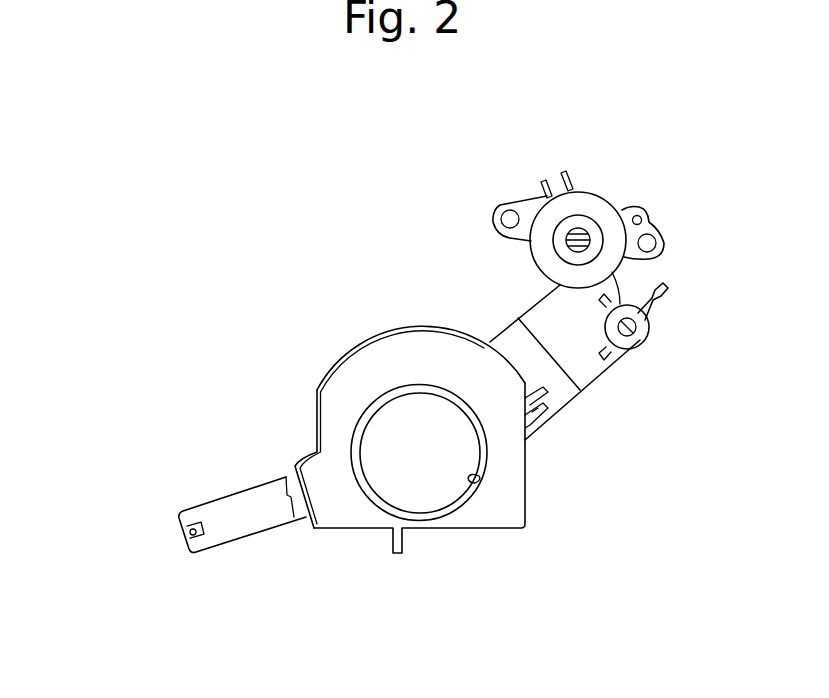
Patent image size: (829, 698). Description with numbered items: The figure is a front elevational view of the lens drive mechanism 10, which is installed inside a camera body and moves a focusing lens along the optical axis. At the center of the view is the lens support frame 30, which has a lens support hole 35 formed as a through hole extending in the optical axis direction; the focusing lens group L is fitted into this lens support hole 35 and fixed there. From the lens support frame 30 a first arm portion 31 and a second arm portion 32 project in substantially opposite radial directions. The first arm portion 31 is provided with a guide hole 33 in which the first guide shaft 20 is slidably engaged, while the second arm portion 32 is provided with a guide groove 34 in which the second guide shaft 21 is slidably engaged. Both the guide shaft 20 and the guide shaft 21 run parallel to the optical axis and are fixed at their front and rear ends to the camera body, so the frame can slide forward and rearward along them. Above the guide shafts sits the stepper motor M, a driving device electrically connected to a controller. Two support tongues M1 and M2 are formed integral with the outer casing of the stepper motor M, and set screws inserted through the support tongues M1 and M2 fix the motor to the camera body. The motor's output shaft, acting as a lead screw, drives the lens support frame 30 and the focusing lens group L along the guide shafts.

The lens drive mechanism 10 is at (338, 196).
The lens support frame 30 is at (345, 392).
The first arm portion 31 is at (548, 315).
The second arm portion 32 is at (232, 517).
The guide hole 33 is at (645, 332).
The guide groove 34 is at (188, 531).
The lens support hole 35 is at (478, 486).
The first guide shaft 20 is at (627, 328).
The second guide shaft 21 is at (190, 543).
The focusing lens group L is at (402, 425).
The stepper motor M is at (588, 202).
The support tongue M1 is at (650, 225).
The support tongue M2 is at (503, 203).